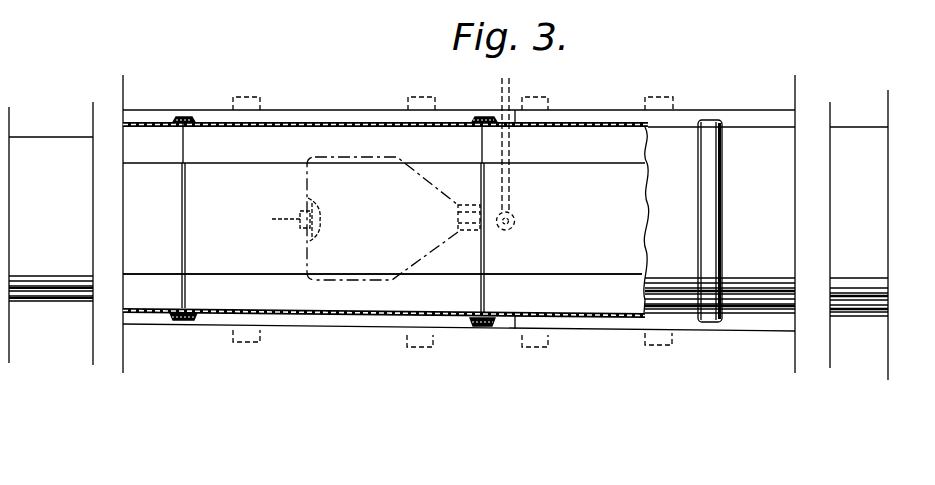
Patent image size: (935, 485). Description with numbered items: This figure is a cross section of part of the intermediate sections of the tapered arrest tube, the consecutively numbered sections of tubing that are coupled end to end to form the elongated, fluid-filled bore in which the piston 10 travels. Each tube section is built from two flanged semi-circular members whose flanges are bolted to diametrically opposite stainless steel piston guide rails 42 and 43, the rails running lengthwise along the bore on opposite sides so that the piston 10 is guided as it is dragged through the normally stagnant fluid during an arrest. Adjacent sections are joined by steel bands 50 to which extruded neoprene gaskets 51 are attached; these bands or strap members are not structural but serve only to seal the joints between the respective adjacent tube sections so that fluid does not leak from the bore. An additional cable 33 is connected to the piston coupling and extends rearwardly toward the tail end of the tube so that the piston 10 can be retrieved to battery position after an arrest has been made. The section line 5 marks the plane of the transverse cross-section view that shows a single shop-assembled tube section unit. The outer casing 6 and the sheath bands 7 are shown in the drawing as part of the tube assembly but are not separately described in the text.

The section line 5 is at (166, 346).
The tubular casing 6 is at (338, 138).
The protective sheath band 7 is at (595, 105).
The piston 10 is at (368, 264).
The additional cable 33 is at (281, 219).
The piston guide rail 42 is at (540, 278).
The piston guide rail 43 is at (597, 157).
The steel band 50 is at (186, 120).
The extruded neoprene gasket 51 is at (197, 122).